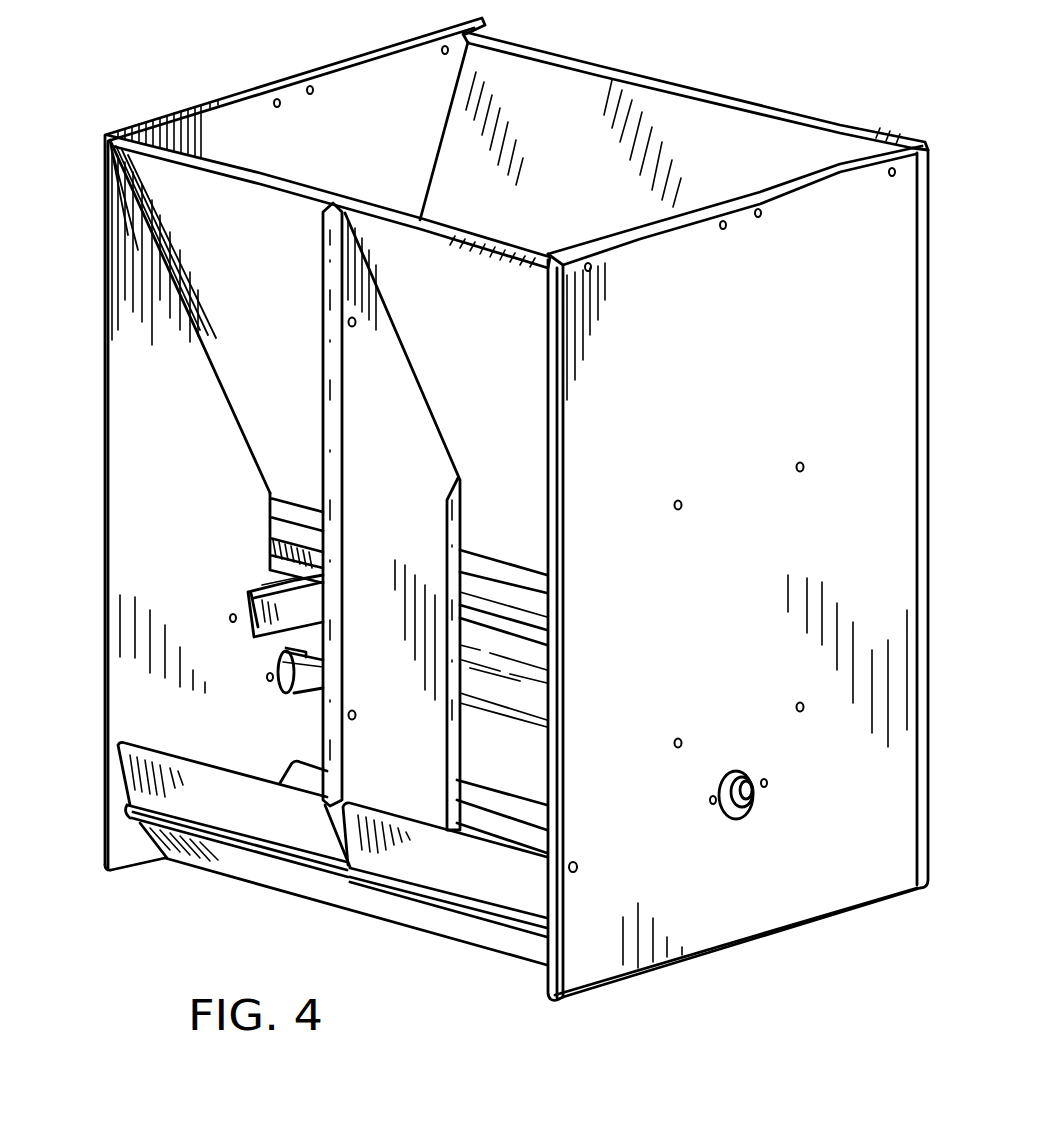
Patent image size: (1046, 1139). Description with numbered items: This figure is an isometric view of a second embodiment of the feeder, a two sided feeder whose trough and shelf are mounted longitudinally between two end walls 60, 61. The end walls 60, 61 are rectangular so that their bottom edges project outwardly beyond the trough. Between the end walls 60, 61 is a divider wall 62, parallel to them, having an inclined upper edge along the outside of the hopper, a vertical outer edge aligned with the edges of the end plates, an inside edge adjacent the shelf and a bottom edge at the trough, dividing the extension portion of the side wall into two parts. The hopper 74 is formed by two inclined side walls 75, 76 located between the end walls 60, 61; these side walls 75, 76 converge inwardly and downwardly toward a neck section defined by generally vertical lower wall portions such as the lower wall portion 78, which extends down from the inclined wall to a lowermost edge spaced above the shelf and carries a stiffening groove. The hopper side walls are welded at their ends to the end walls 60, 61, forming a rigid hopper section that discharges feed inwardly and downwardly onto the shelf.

The end wall 60 is at (140, 485).
The end wall 61 is at (697, 603).
The divider wall 62 is at (403, 430).
The hopper 74 is at (703, 133).
The inclined side wall 75 is at (247, 375).
The inclined side wall 76 is at (457, 168).
The lower wall portion 78 is at (256, 534).